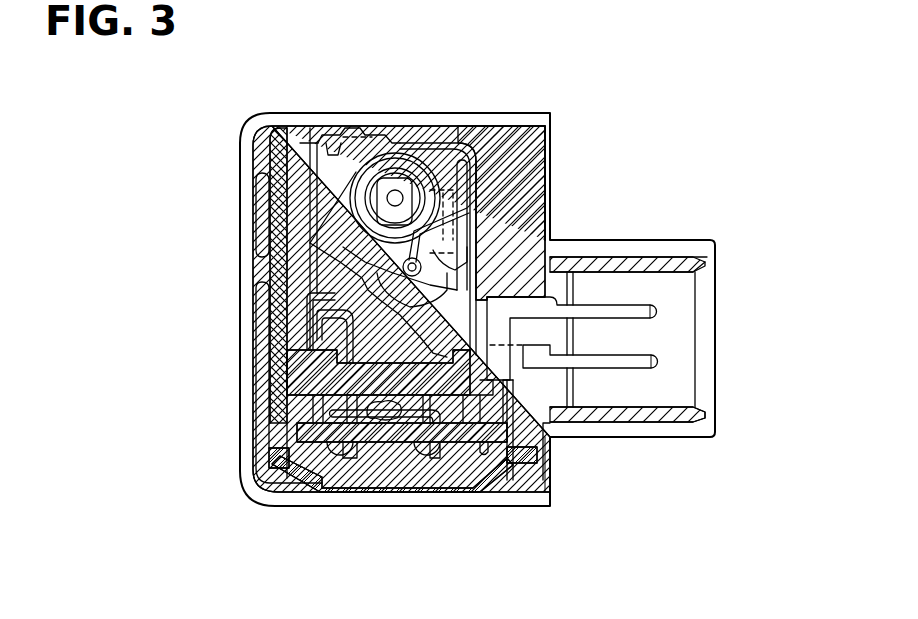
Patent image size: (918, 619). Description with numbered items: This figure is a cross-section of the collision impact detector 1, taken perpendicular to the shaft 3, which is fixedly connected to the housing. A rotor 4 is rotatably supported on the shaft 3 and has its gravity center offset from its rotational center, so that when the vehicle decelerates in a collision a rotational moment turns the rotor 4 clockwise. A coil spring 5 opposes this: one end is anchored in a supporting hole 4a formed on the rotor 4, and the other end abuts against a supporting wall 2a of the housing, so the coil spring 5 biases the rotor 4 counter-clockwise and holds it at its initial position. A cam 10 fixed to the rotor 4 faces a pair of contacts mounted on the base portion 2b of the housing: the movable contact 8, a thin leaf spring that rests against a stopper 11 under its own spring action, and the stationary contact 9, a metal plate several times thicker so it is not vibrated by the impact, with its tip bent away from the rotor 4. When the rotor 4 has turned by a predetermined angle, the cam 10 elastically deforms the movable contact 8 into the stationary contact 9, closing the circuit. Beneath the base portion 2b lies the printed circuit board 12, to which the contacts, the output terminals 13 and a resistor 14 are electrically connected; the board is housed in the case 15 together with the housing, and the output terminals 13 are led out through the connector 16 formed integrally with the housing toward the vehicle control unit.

The impact detector 1 is at (535, 80).
The supporting wall 2a is at (467, 233).
The base portion 2b is at (323, 390).
The shaft 3 is at (397, 193).
The rotor 4 is at (330, 227).
The supporting hole 4a is at (343, 245).
The coil spring 5 is at (360, 137).
The movable contact 8 is at (375, 268).
The stationary contact 9 is at (315, 332).
The cam 10 is at (542, 231).
The stopper 11 is at (345, 297).
The printed circuit board 12 is at (454, 440).
The output terminals 13 is at (657, 360).
The resistor 14 is at (380, 417).
The case 15 is at (247, 388).
The connector 16 is at (648, 264).